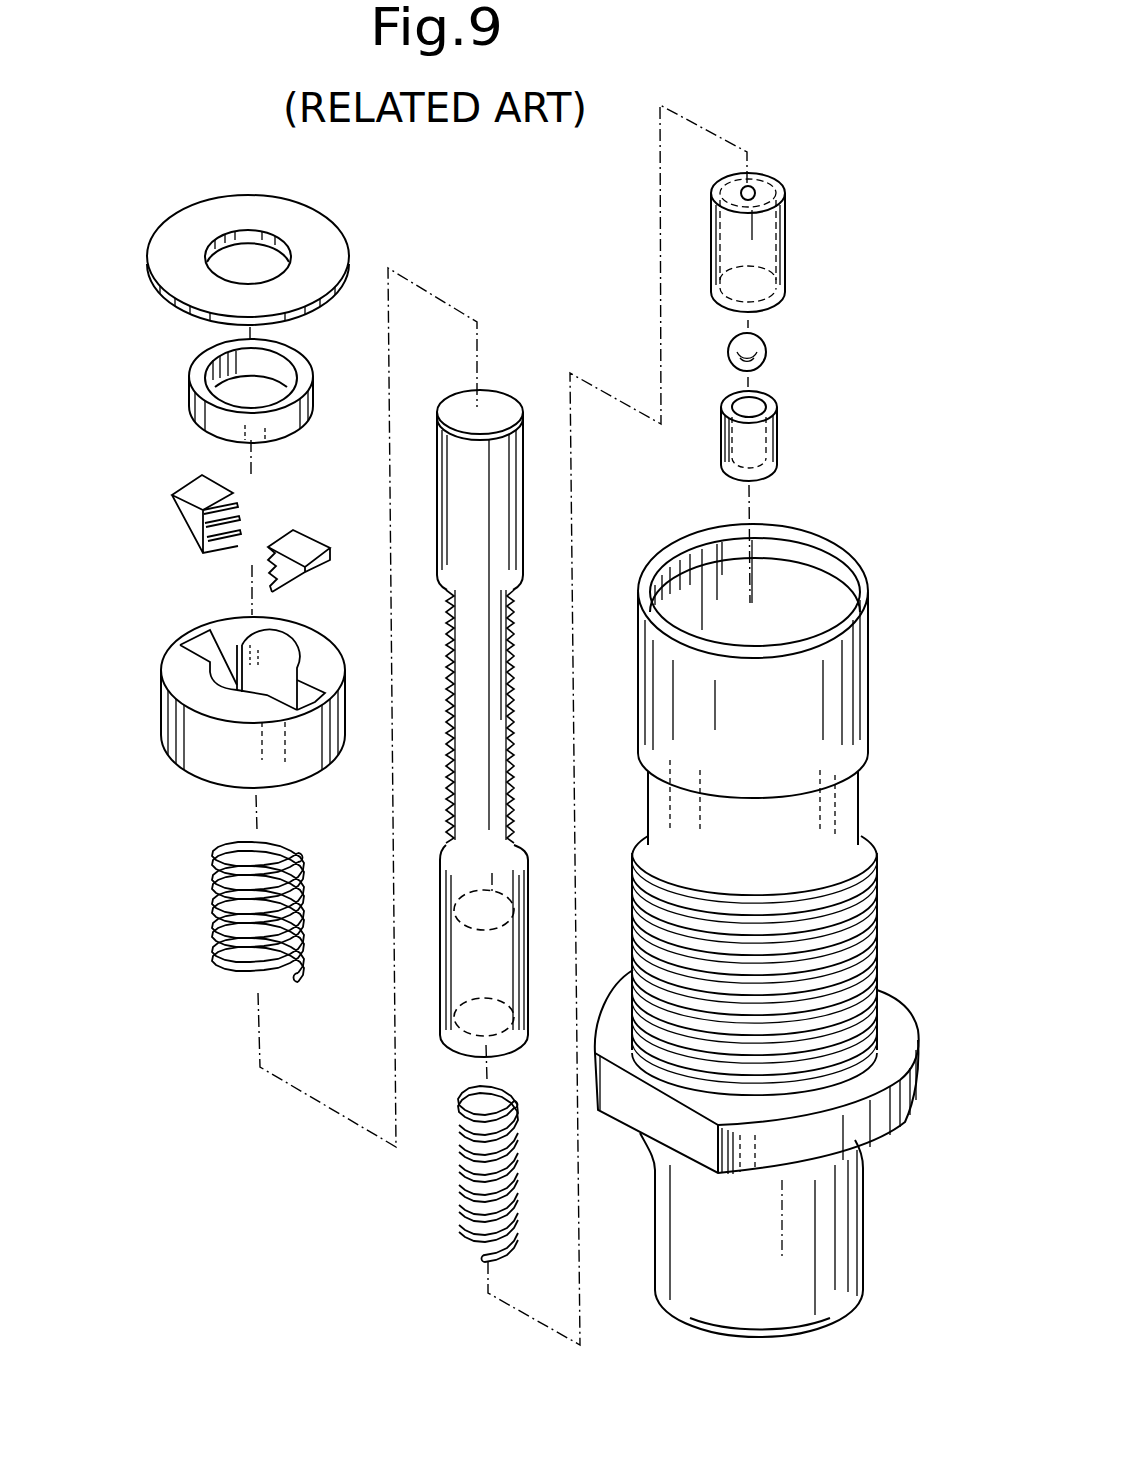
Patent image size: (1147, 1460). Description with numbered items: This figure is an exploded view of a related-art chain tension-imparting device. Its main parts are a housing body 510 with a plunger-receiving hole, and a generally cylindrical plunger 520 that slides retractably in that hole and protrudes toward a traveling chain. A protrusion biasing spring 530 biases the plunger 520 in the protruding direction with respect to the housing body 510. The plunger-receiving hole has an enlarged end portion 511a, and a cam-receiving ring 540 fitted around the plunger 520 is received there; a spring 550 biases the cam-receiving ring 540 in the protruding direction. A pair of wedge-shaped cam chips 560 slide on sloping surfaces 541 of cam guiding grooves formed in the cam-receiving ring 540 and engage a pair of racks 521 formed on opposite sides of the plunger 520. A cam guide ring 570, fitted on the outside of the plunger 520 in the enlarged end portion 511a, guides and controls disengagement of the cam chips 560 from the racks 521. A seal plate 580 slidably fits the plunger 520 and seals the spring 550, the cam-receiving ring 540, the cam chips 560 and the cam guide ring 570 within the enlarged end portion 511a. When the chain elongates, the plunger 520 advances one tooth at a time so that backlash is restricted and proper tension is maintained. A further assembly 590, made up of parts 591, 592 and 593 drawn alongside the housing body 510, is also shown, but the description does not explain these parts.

The housing body 510 is at (788, 930).
The enlarged end portion 511a is at (798, 592).
The plunger 520 is at (477, 680).
The racks 521 is at (515, 722).
The protrusion biasing spring 530 is at (457, 1203).
The cam-receiving ring 540 is at (229, 692).
The sloping surfaces 541 is at (203, 642).
The spring 550 is at (210, 873).
The wedge-shaped cam chips 560 is at (188, 485).
The cam guide ring 570 is at (195, 376).
The seal plate 580 is at (183, 230).
The valve assembly 590 is at (839, 327).
The valve seat sleeve 591 is at (800, 436).
The ball 592 is at (767, 352).
The valve cylinder 593 is at (787, 257).